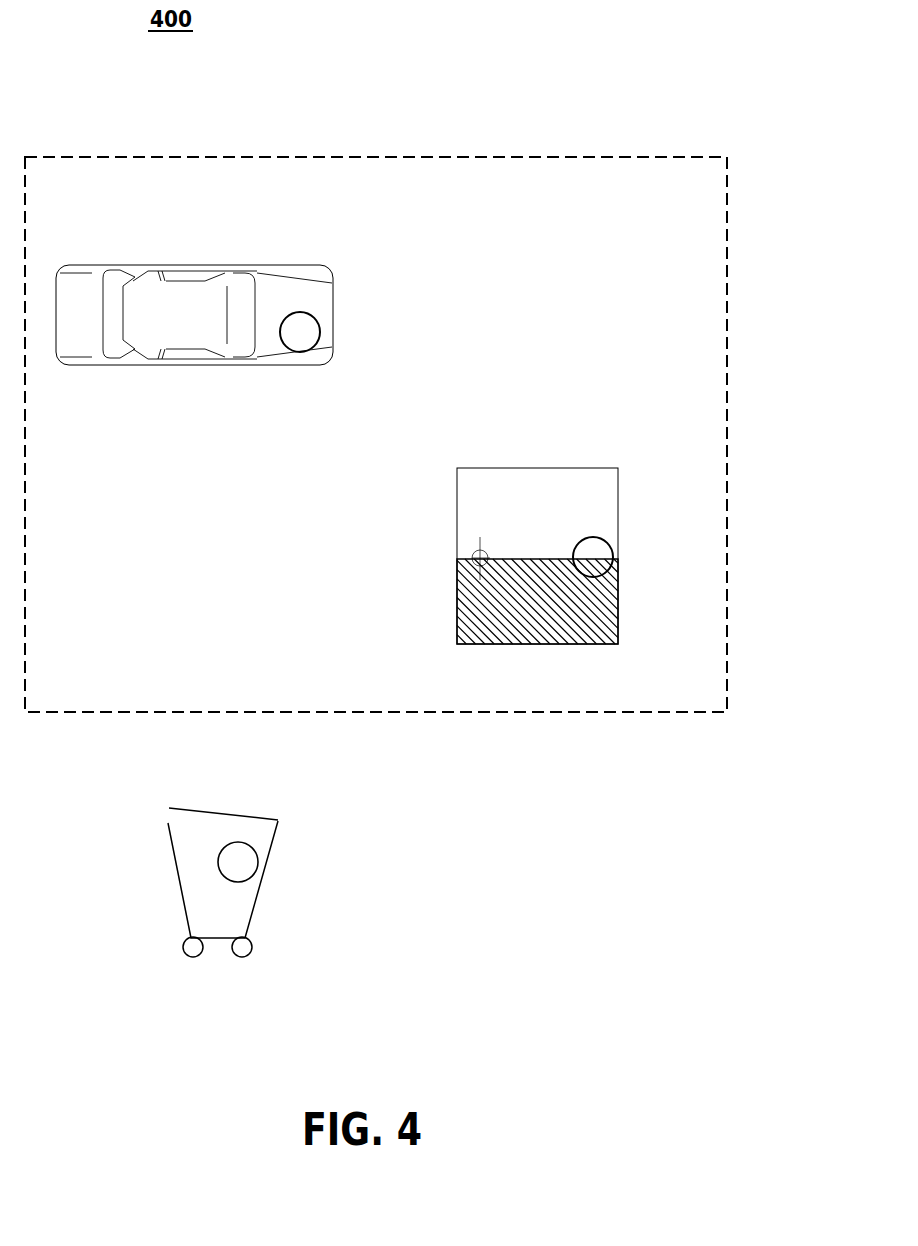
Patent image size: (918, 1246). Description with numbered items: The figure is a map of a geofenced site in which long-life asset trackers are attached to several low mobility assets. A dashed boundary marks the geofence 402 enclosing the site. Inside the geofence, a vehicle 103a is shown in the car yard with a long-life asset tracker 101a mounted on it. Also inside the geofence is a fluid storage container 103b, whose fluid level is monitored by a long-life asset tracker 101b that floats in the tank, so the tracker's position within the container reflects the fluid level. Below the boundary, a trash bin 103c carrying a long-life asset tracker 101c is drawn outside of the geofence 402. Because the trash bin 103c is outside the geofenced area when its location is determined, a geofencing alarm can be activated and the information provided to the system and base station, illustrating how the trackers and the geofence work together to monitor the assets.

The geofence 402 is at (727, 430).
The vehicle 103a is at (157, 271).
The long-life asset tracker 101a is at (303, 343).
The fluid storage container 103b is at (458, 527).
The long-life asset tracker 101b is at (597, 568).
The trash bin 103c is at (198, 808).
The long-life asset tracker 101c is at (242, 875).